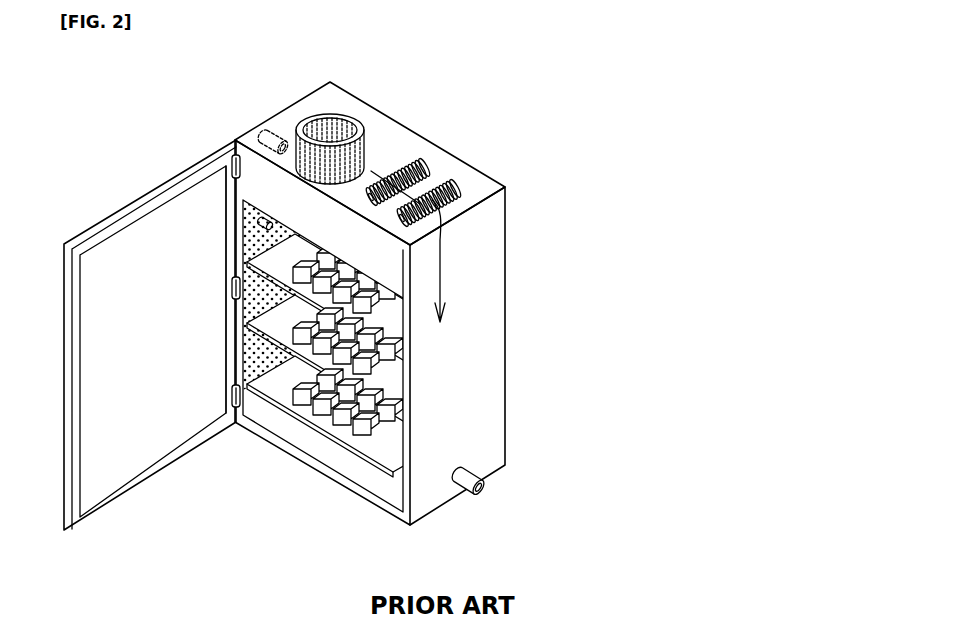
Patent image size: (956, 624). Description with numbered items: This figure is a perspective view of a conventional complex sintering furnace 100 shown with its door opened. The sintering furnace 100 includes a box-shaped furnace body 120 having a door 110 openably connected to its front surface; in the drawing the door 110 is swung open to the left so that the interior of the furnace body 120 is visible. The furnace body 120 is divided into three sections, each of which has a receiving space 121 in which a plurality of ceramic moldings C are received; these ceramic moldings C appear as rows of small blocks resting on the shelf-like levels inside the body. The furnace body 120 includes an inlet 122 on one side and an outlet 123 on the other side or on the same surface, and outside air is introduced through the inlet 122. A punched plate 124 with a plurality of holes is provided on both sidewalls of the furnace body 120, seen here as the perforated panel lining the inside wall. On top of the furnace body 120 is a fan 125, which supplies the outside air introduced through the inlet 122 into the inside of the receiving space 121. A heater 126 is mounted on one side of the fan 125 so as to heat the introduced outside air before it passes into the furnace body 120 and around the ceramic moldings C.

The sintering furnace 100 is at (480, 108).
The door 110 is at (138, 232).
The furnace body 120 is at (499, 353).
The receiving space 121 is at (284, 400).
The inlet 122 is at (277, 131).
The outlet 123 is at (259, 222).
The punched plate 124 is at (268, 378).
The fan 125 is at (344, 127).
The heater 126 is at (461, 179).
The ceramic moldings C is at (357, 447).